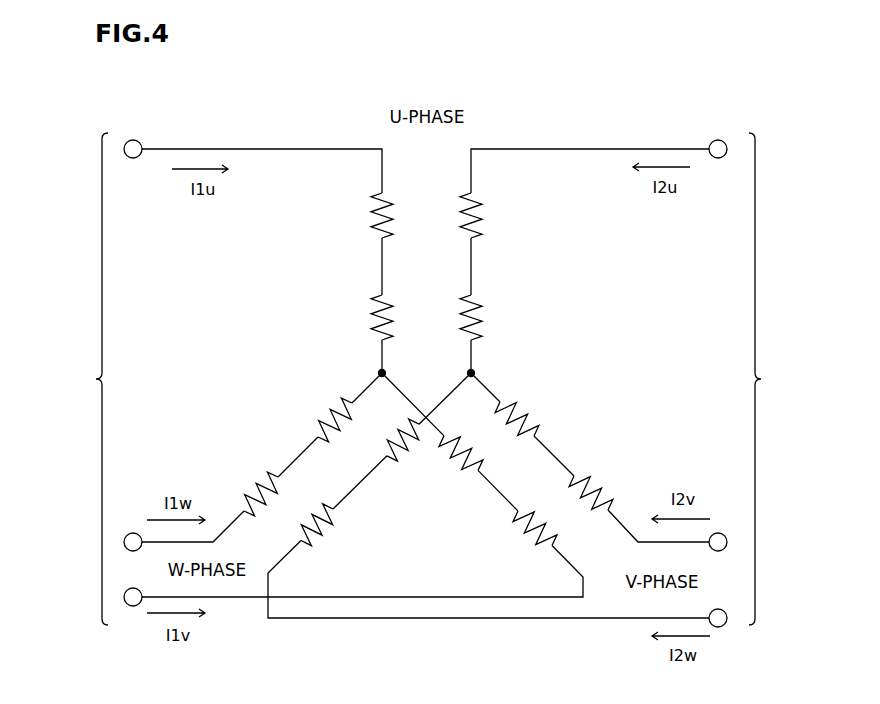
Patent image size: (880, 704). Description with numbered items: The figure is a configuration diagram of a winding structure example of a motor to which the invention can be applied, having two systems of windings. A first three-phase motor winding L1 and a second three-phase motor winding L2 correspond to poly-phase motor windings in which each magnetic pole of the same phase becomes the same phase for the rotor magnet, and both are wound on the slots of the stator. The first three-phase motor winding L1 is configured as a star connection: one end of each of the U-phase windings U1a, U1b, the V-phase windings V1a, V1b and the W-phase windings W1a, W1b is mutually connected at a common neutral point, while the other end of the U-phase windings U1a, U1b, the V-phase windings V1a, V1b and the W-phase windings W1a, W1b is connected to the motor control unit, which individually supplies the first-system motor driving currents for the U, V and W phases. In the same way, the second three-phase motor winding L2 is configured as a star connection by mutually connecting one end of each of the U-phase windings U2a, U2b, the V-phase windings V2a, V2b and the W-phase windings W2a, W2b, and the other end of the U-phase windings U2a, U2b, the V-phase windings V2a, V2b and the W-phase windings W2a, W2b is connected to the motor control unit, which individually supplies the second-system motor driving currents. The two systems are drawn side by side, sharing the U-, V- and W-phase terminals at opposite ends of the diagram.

The U-phase winding U1a is at (348, 215).
The U-phase winding U1b is at (348, 317).
The U-phase winding U2a is at (508, 215).
The U-phase winding U2b is at (508, 317).
The V-phase winding V1a is at (527, 543).
The V-phase winding V1b is at (461, 472).
The V-phase winding V2a is at (607, 485).
The V-phase winding V2b is at (525, 409).
The W-phase winding W1a is at (245, 487).
The W-phase winding W1b is at (323, 411).
The W-phase winding W2a is at (333, 540).
The W-phase winding W2b is at (398, 463).
The first 3-phase motor winding L1 is at (65, 379).
The second 3-phase motor winding L2 is at (797, 379).